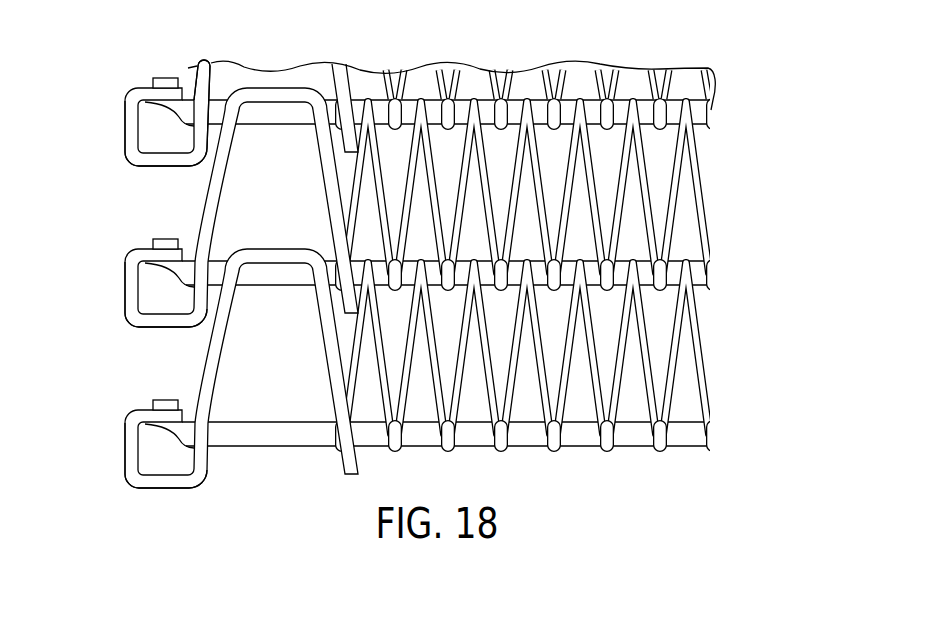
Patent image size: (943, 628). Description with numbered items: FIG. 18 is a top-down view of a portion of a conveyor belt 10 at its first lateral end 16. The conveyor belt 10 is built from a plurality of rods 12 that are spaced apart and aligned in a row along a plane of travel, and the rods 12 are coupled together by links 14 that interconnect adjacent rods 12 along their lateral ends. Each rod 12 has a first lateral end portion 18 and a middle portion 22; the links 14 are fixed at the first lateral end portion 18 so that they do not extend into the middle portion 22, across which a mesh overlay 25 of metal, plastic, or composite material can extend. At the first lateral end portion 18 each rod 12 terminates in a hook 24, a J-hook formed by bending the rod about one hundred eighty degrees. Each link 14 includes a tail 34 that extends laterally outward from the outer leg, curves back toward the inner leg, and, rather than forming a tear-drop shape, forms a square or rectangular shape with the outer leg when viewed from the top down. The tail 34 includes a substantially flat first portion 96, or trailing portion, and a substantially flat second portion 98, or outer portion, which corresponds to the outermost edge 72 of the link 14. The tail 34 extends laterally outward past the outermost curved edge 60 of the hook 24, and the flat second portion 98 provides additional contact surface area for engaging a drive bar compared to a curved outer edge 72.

The conveyor belt 10 is at (421, 270).
The rod 12 is at (285, 136).
The link 14 is at (233, 189).
The first lateral end 16 is at (147, 42).
The first lateral end portion 18 is at (178, 55).
The middle portion 22 is at (642, 64).
The hook 24 is at (153, 71).
The mesh overlay 25 is at (683, 192).
The tail 34 is at (128, 171).
The curved edge 60 is at (152, 112).
The outermost edge 72 is at (121, 137).
The first portion 96 is at (178, 171).
The second portion 98 is at (122, 123).